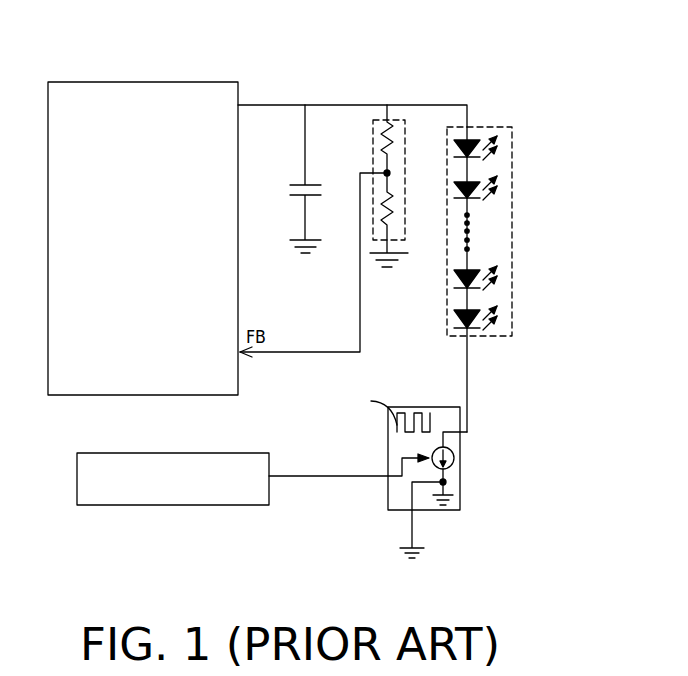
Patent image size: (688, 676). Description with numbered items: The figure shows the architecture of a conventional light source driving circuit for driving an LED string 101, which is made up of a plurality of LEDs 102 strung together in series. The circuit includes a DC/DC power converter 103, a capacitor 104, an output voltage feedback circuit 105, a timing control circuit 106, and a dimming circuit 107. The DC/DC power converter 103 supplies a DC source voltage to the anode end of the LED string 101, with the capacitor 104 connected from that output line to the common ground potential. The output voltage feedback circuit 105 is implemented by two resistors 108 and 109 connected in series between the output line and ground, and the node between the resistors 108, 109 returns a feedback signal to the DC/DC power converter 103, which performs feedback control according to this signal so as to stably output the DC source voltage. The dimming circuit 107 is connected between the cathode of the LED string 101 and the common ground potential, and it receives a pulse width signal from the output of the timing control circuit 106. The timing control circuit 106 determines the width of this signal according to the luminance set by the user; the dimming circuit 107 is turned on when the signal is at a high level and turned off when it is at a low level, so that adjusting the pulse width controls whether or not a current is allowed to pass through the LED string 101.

The LED string 101 is at (475, 127).
The LED 102 is at (482, 128).
The DC/DC power converter 103 is at (150, 82).
The capacitor 104 is at (298, 196).
The output voltage feedback circuit 105 is at (380, 120).
The timing control circuit 106 is at (118, 505).
The dimming circuit 107 is at (460, 468).
The resistor 108 is at (387, 122).
The resistor 109 is at (382, 205).